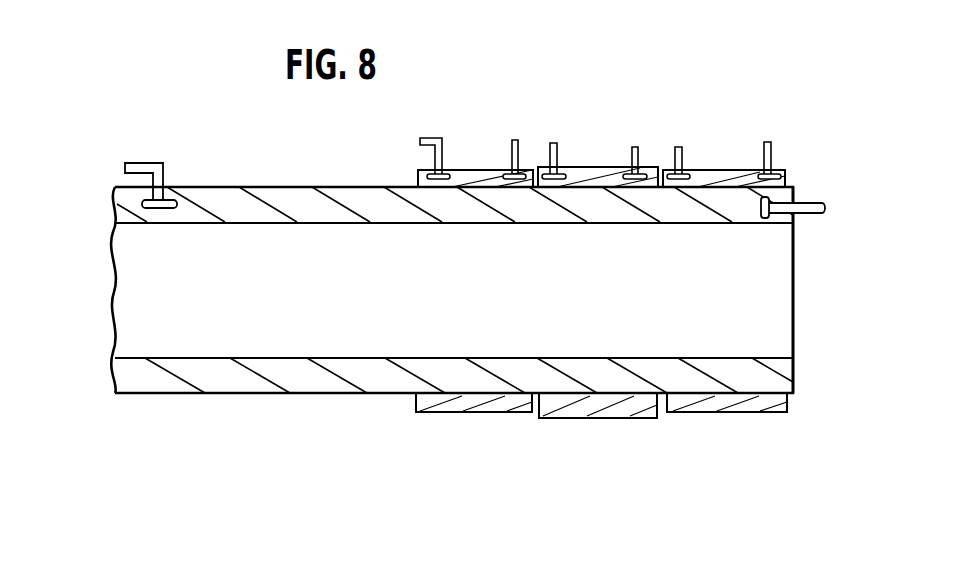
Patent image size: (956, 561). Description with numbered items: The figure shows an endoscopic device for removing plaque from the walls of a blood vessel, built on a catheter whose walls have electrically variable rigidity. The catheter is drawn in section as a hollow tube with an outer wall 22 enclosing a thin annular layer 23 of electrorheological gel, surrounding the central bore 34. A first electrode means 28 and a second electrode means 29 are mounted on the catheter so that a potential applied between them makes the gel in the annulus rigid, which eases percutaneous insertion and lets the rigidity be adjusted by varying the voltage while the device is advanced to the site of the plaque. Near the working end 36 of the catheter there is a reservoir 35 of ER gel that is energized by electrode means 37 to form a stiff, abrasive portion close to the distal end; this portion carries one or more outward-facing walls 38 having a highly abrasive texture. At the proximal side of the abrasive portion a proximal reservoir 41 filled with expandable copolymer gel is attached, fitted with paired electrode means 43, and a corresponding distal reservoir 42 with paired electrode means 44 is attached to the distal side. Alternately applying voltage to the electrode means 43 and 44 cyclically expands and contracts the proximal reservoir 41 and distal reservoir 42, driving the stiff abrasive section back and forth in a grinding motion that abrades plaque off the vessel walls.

The outer wall 22 is at (237, 187).
The annular layer of ER gel 23 is at (295, 202).
The first electrode means 28 is at (135, 163).
The second electrode means 29 is at (812, 194).
The bore 34 is at (147, 223).
The reservoir 35 is at (605, 172).
The working end 36 is at (797, 322).
The electrode means 37 is at (550, 158).
The outward-facing walls 38 is at (574, 172).
The proximal reservoir 41 is at (462, 170).
The distal reservoir 42 is at (720, 170).
The paired electrode means 43 is at (420, 143).
The paired electrode means 44 is at (694, 128).